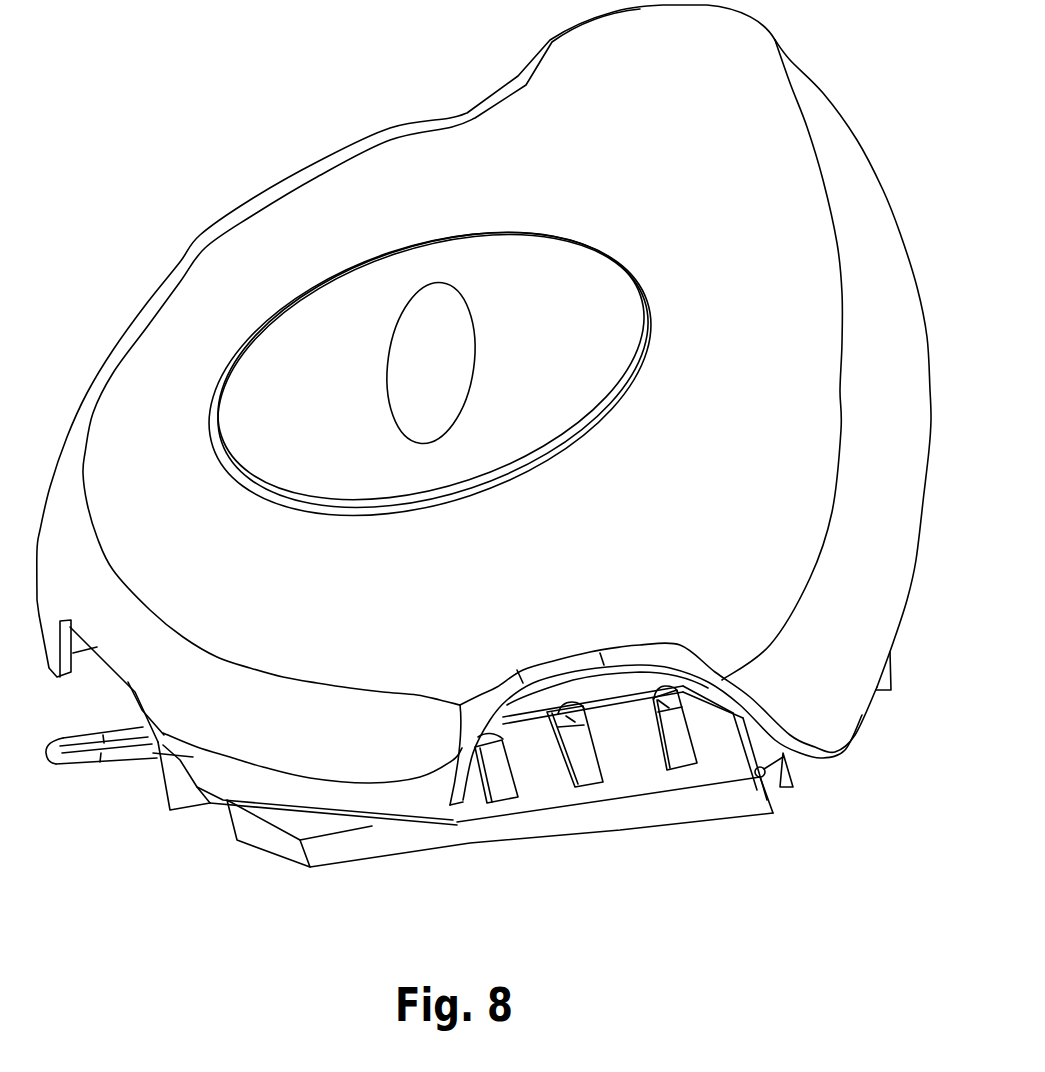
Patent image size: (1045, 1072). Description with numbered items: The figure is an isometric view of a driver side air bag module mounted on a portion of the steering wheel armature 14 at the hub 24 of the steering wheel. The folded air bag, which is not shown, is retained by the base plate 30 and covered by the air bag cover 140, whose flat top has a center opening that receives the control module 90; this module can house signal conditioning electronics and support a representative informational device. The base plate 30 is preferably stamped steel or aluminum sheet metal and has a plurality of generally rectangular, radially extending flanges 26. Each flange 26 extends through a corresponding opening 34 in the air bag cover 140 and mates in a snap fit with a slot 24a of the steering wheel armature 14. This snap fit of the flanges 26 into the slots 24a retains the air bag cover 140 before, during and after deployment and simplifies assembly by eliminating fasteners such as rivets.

The air bag cover 140 is at (401, 167).
The control module 90 is at (294, 333).
The opening 34 is at (573, 704).
The flanges 26 is at (552, 714).
The slots 24a is at (467, 822).
The hub 24 is at (703, 807).
The steering wheel armature 14 is at (684, 812).
The base plate 30 is at (193, 757).